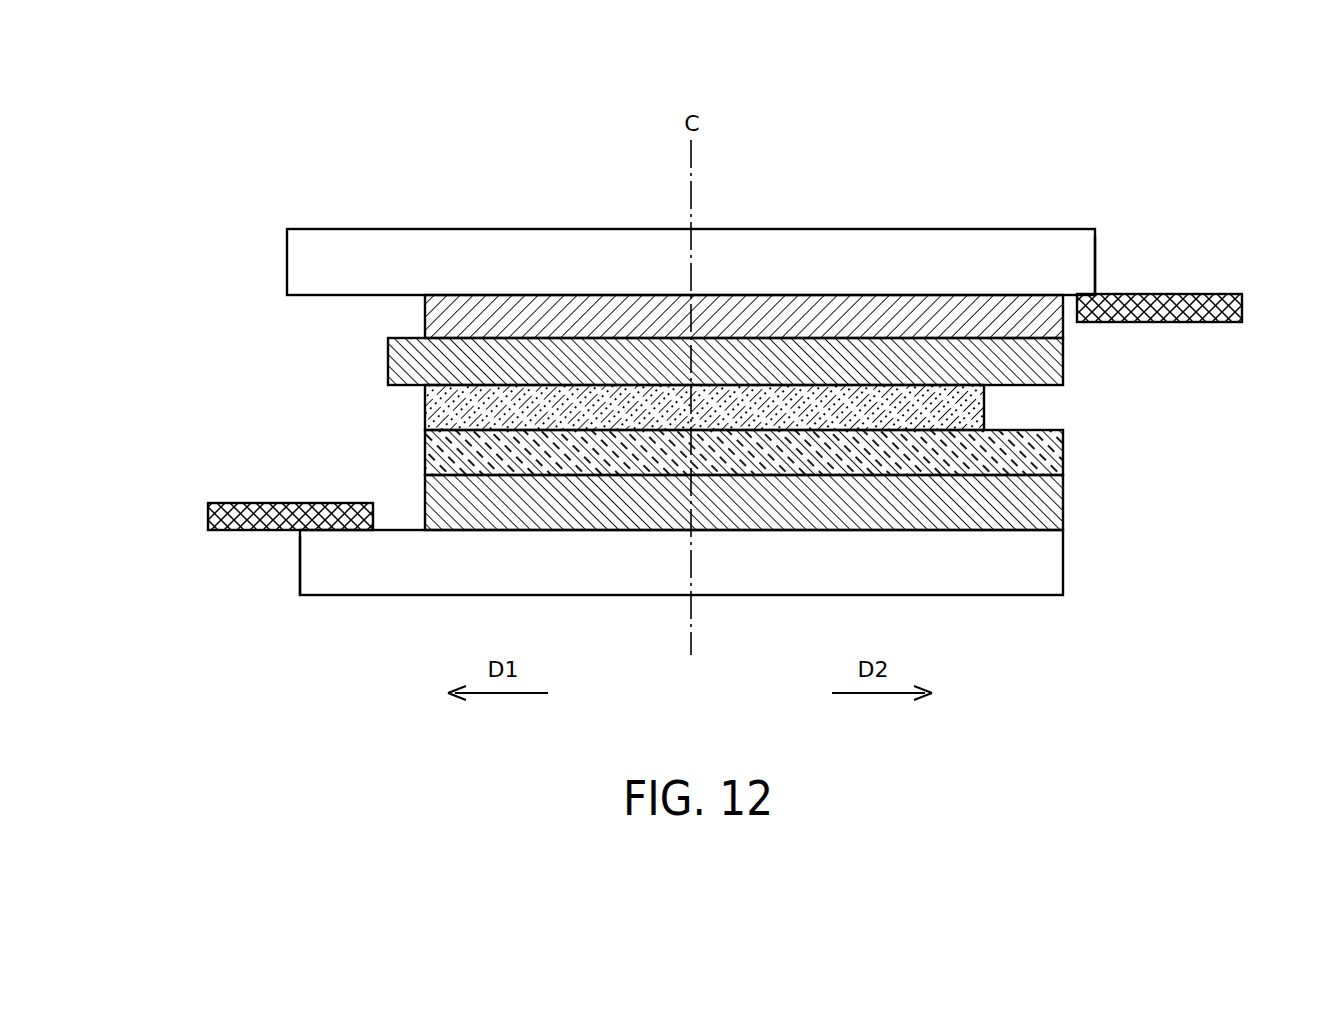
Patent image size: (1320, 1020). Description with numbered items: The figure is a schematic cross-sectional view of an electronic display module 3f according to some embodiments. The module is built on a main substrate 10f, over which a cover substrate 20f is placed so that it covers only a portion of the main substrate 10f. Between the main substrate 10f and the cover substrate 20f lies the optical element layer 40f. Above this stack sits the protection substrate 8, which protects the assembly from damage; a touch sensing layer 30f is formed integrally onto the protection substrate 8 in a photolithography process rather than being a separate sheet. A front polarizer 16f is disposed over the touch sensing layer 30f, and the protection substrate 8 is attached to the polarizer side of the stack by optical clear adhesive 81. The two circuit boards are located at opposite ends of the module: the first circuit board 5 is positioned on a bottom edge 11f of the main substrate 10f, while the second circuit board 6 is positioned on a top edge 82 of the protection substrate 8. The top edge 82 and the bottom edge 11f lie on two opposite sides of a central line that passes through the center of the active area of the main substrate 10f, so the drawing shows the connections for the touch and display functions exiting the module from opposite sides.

The electronic display module 3f is at (244, 140).
The protection substrate 8 is at (310, 263).
The top edge 82 is at (1097, 262).
The second circuit board 6 is at (1242, 302).
The touch sensing layer 30f is at (444, 320).
The optical clear adhesive 81 is at (410, 364).
The front polarizer 16f is at (444, 408).
The cover substrate 20f is at (1040, 455).
The optical element layer 40f is at (1040, 498).
The main substrate 10f is at (1040, 566).
The bottom edge 11f is at (300, 563).
The first circuit board 5 is at (208, 513).